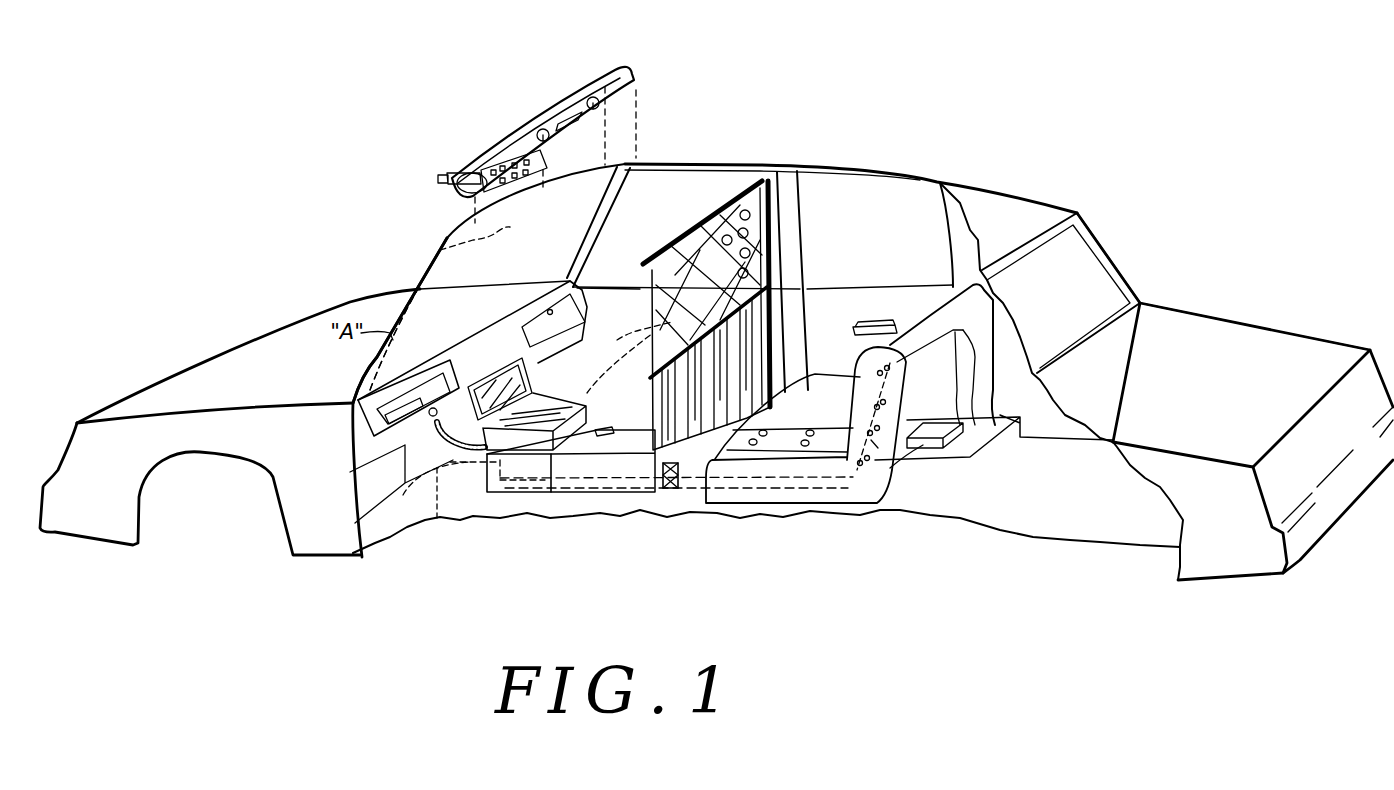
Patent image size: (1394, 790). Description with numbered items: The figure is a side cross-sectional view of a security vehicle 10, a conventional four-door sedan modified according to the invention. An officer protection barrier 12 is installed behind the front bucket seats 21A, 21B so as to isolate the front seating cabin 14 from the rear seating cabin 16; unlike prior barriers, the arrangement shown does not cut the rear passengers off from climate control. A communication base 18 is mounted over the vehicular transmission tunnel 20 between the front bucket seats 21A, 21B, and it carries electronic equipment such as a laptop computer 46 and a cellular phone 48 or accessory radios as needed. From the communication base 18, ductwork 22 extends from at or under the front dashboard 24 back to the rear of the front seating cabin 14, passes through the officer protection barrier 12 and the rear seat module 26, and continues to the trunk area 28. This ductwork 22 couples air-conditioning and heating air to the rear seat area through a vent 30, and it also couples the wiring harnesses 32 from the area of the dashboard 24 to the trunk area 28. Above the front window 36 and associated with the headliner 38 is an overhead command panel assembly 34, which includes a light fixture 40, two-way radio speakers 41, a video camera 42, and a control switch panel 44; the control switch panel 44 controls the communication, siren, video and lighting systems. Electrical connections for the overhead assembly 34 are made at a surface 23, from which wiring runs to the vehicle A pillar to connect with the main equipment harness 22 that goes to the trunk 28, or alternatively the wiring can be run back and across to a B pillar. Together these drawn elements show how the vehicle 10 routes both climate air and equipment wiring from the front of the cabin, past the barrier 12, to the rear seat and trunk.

The security vehicle 10 is at (317, 327).
The officer protection barrier 12 is at (708, 208).
The front seating cabin 14 is at (601, 317).
The rear seating cabin 16 is at (832, 315).
The communication base 18 is at (588, 460).
The vehicular transmission tunnel 20 is at (467, 493).
The front bucket seat 21A is at (440, 514).
The front bucket seat 21B is at (625, 357).
The ductwork 22 is at (343, 440).
The surface 23 is at (490, 232).
The front dashboard 24 is at (497, 352).
The rear seat module 26 is at (938, 317).
The trunk area 28 is at (1082, 517).
The vent 30 is at (670, 490).
The wiring harnesses 32 is at (456, 362).
The overhead command panel assembly 34 is at (580, 90).
The front window 36 is at (428, 270).
The headliner 38 is at (593, 178).
The light fixture 40 is at (557, 110).
The two-way radio speakers 41 is at (633, 73).
The video camera 42 is at (443, 173).
The control switch panel 44 is at (503, 183).
The laptop computer 46 is at (597, 428).
The cellular phone 48 is at (603, 427).